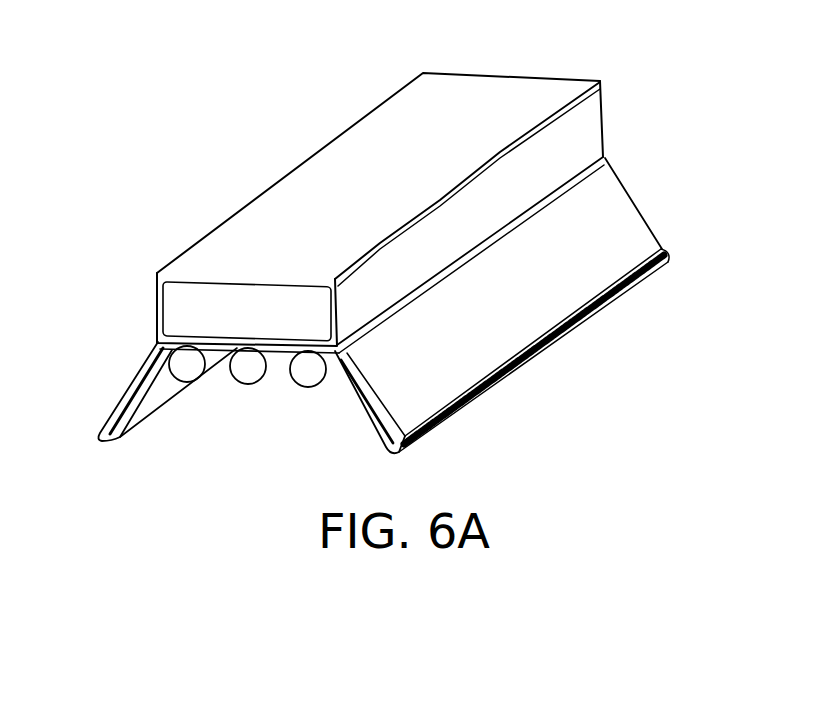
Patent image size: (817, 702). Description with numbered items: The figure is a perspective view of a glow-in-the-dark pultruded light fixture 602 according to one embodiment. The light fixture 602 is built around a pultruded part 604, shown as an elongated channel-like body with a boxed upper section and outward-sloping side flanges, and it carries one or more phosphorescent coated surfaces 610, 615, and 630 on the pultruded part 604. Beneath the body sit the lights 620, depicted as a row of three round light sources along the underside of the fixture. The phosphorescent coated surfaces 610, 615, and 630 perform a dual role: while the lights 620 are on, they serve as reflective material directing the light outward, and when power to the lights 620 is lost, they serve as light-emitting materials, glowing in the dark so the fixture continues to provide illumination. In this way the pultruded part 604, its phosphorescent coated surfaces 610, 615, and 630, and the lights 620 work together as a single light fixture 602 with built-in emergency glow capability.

The light fixture 602 is at (637, 75).
The pultruded part 604 is at (585, 225).
The phosphorescent coated surface 610 is at (145, 412).
The phosphorescent coated surface 615 is at (364, 425).
The lights 620 is at (248, 384).
The phosphorescent coated surface 630 is at (300, 349).